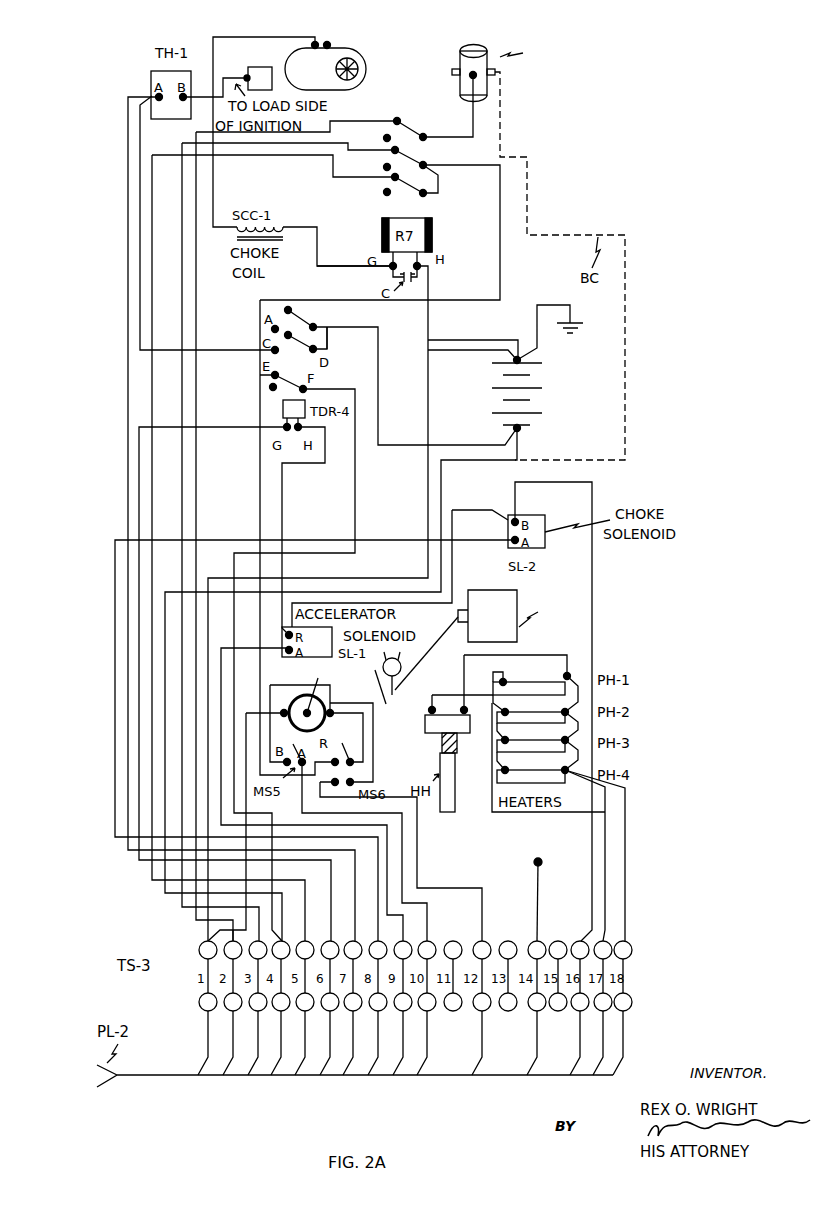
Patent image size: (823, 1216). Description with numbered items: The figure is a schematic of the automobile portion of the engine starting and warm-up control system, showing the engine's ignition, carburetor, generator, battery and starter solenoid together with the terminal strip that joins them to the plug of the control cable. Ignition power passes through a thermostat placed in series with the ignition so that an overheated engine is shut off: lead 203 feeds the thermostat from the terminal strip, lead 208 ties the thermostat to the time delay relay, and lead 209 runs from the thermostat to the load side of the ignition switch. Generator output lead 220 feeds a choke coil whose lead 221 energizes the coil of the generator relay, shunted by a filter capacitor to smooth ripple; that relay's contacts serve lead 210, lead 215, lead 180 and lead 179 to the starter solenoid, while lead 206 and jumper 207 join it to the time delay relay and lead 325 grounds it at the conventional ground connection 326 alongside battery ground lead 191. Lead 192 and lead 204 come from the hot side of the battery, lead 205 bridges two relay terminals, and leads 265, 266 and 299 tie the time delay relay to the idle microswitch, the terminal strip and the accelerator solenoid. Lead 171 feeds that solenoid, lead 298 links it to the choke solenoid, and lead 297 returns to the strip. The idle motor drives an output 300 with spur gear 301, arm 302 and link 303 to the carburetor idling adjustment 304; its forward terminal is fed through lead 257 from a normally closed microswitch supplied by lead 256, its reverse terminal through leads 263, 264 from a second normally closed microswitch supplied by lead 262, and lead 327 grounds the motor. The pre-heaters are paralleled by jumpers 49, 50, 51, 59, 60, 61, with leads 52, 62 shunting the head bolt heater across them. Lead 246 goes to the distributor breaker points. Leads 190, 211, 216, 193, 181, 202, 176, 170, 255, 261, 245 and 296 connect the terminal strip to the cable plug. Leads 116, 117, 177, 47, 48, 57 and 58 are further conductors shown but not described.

The lead 203 is at (130, 182).
The lead 208 is at (142, 148).
The lead 209 is at (224, 88).
The lead 220 is at (245, 37).
The lead 215 is at (183, 173).
The lead 210 is at (197, 193).
The lead 221 is at (352, 266).
The lead 180 is at (377, 121).
The lead 179 is at (462, 135).
The jumper 207 is at (439, 185).
The lead 206 is at (502, 233).
The lead 191 is at (429, 428).
The lead 325 is at (467, 326).
The lead 192 is at (518, 434).
The ground connection 326 is at (571, 323).
The lead 204 is at (332, 328).
The lead 205 is at (328, 340).
The lead 265 is at (258, 483).
The lead 266 is at (355, 490).
The conductor 117 is at (215, 427).
The lead 299 is at (282, 515).
The conductor 177 is at (370, 540).
The lead 298 is at (468, 508).
The lead 297 is at (592, 625).
The carburetor idling adjustment 304 is at (513, 616).
The link 303 is at (418, 672).
The spur gear 301 is at (404, 660).
The arm 302 is at (407, 692).
The output line 300 is at (391, 698).
The lead 171 is at (270, 650).
The lead 257 is at (302, 684).
The lead 327 is at (240, 790).
The lead 264 is at (363, 718).
The lead 263 is at (366, 758).
The lead 256 is at (430, 935).
The lead 262 is at (448, 887).
The lead 52 is at (447, 695).
The lead 62 is at (548, 655).
The jumper 51 is at (493, 692).
The jumper 61 is at (560, 700).
The jumper 60 is at (560, 730).
The jumper 59 is at (560, 760).
The jumper 50 is at (493, 725).
The jumper 49 is at (493, 755).
The conductor 48 is at (607, 867).
The conductor 58 is at (625, 900).
The lead 246 is at (540, 920).
The lead 190 is at (207, 1036).
The lead 211 is at (228, 1065).
The lead 216 is at (253, 1070).
The lead 193 is at (276, 1065).
The lead 181 is at (300, 1070).
The conductor 116 is at (325, 1065).
The lead 202 is at (348, 1070).
The lead 176 is at (373, 1065).
The lead 170 is at (398, 1070).
The lead 255 is at (422, 1065).
The lead 261 is at (477, 1065).
The lead 245 is at (532, 1065).
The lead 296 is at (575, 1065).
The conductor 47 is at (598, 1065).
The conductor 57 is at (618, 1065).